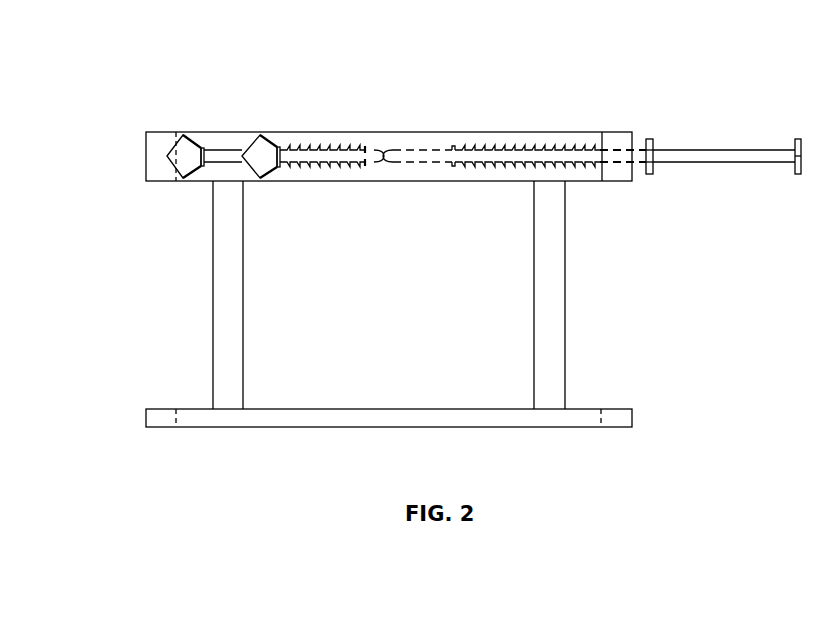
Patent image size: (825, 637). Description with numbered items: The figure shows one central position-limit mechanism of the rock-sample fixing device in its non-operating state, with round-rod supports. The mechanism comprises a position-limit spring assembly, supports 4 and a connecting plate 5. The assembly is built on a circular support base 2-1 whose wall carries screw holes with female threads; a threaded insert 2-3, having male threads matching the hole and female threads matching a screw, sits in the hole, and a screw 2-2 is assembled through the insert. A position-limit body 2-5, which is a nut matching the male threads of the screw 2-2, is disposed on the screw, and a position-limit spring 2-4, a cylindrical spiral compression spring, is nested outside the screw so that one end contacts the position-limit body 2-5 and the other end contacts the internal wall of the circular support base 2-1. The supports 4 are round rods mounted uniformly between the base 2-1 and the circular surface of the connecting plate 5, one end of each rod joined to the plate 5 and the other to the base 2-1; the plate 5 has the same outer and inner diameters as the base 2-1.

The circular support base 2-1 is at (162, 153).
The screw 2-2 is at (225, 153).
The threaded insert 2-3 is at (650, 146).
The position-limit spring 2-4 is at (543, 152).
The position-limit body 2-5 is at (454, 148).
The support 4 is at (232, 263).
The connecting plate 5 is at (163, 420).